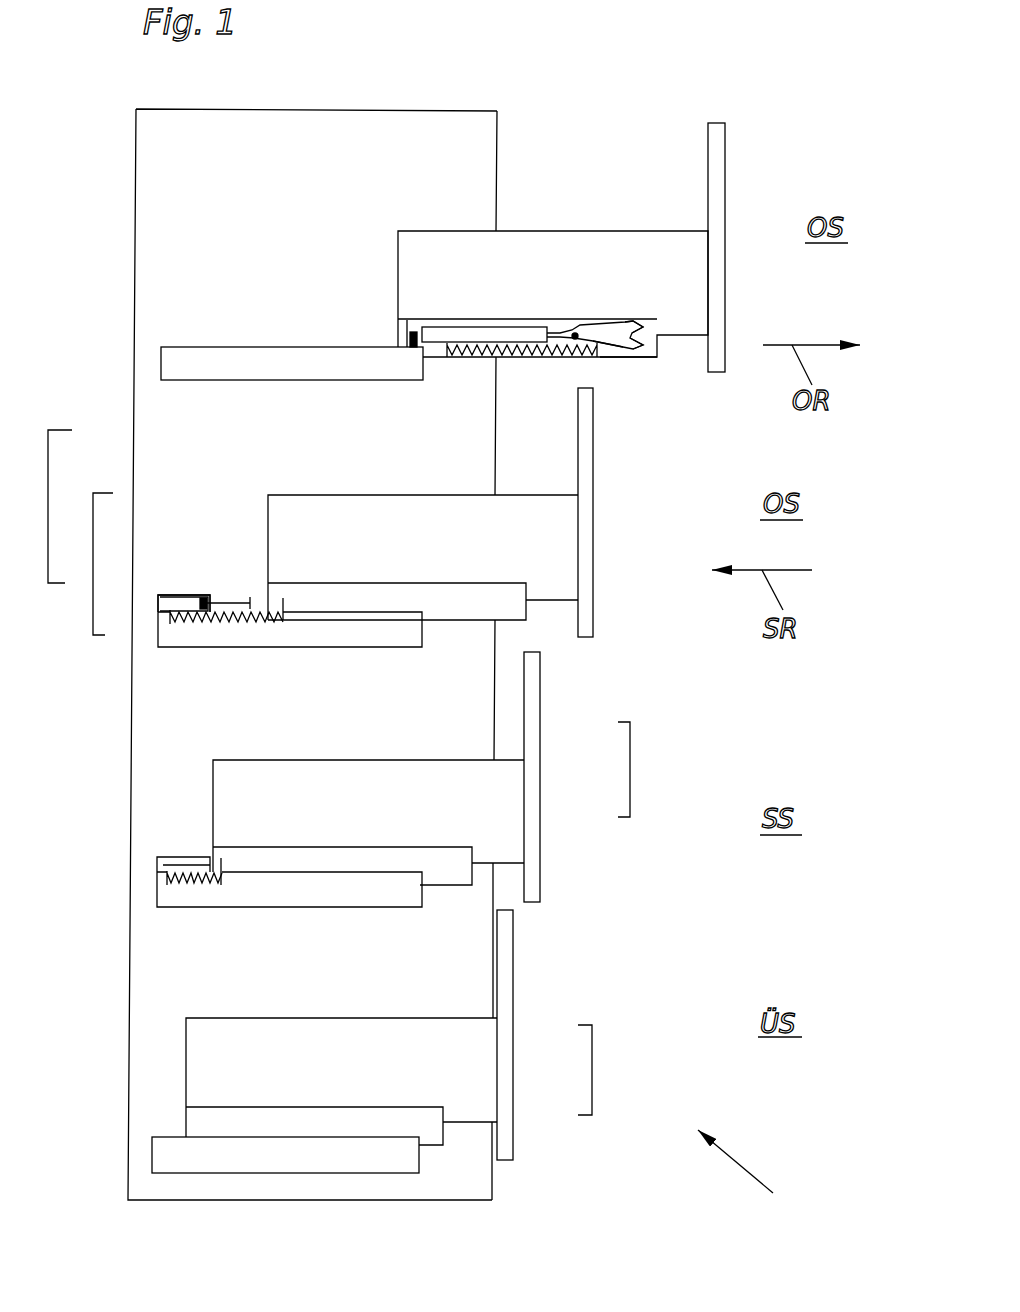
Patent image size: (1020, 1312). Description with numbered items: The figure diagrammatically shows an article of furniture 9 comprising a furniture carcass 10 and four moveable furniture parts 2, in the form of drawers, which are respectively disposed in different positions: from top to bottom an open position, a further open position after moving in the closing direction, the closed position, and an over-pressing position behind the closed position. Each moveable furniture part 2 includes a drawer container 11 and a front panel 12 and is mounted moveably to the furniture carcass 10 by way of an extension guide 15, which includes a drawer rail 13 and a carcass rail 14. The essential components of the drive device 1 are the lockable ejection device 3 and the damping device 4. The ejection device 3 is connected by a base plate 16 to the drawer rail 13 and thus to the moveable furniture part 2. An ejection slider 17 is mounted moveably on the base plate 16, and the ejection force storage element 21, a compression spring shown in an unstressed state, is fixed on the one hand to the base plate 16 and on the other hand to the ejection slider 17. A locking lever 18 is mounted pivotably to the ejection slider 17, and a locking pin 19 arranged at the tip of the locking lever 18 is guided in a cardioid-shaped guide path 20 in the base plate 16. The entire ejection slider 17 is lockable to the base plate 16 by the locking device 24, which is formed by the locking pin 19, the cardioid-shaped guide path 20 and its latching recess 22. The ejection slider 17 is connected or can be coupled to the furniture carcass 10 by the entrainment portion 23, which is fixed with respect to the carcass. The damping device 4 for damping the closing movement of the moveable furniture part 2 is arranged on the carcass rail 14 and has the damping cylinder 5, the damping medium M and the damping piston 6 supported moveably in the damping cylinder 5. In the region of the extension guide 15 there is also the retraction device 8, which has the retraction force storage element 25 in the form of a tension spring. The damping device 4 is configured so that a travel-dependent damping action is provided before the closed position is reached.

The drive device 1 is at (48, 505).
The moveable furniture part 2 is at (630, 770).
The ejection device 3 is at (558, 312).
The damping device 4 is at (93, 563).
The damping cylinder 5 is at (165, 595).
The damping piston 6 is at (200, 600).
The retraction device 8 is at (288, 617).
The article of furniture 9 is at (751, 1171).
The furniture carcass 10 is at (249, 172).
The drawer container 11 is at (483, 787).
The front panel 12 is at (535, 733).
The drawer rail 13 is at (340, 1120).
The carcass rail 14 is at (312, 897).
The extension guide 15 is at (592, 1072).
The base plate 16 is at (618, 360).
The ejection slider 17 is at (493, 333).
The locking lever 18 is at (563, 333).
The locking pin 19 is at (578, 333).
The cardioid-shaped guide path 20 is at (633, 347).
The ejection force storage element 21 is at (548, 357).
The latching recess 22 is at (647, 330).
The entrainment portion 23 is at (415, 333).
The locking device 24 is at (642, 313).
The retraction force storage element 25 is at (225, 617).
The damping medium M is at (173, 603).